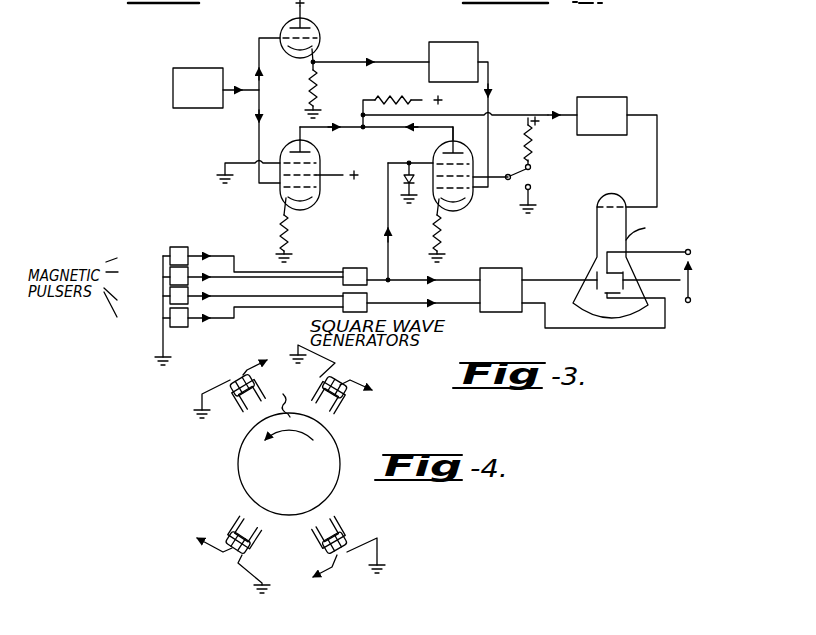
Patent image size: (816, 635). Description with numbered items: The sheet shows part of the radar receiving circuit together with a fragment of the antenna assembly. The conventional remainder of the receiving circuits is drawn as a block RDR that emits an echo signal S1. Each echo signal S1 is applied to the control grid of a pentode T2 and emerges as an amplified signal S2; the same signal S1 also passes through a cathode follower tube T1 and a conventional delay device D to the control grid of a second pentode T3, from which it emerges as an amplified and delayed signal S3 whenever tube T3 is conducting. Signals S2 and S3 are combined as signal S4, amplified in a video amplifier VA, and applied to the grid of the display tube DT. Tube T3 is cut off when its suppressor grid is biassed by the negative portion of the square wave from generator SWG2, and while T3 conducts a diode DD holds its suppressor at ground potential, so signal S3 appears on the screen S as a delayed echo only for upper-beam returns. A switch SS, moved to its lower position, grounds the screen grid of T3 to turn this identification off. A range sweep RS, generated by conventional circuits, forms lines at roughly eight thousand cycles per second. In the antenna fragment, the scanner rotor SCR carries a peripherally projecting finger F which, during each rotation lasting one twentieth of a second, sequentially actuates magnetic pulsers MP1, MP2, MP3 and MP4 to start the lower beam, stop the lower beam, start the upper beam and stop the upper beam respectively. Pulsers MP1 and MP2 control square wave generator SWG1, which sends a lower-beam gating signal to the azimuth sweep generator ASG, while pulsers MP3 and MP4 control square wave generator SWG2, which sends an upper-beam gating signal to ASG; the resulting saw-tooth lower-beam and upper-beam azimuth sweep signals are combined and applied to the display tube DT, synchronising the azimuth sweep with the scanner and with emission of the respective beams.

In FIG. 3, the cathode follower tube T1 is at (284, 29).
In FIG. 3, the pentode T2 is at (359, 179).
In FIG. 3, the second pentode T3 is at (464, 194).
In FIG. 3, the echo signal S1 is at (241, 80).
In FIG. 3, the amplified signal S2 is at (331, 141).
In FIG. 3, the amplified and delayed signal S3 is at (408, 141).
In FIG. 3, the combined signal S4 is at (558, 106).
In FIG. 3, the switch SS is at (531, 173).
In FIG. 3, the screen S is at (581, 316).
In FIG. 3, the radar receiving circuits RDR is at (173, 100).
In FIG. 3, the delay device D is at (429, 50).
In FIG. 3, the diode DD is at (403, 181).
In FIG. 3, the video amplifier VA is at (640, 88).
In FIG. 3, the display tube DT is at (597, 235).
In FIG. 3, the range sweep RS is at (653, 277).
In FIG. 3, the azimuth sweep generator ASG is at (510, 312).
In FIG. 3, the square wave generator SWG1 is at (343, 276).
In FIG. 3, the square wave generator SWG2 is at (367, 298).
In FIG. 3, the magnetic pulser MP1 is at (231, 317).
In FIG. 4, the magnetic pulser MP1 is at (230, 386).
In FIG. 3, the magnetic pulser MP2 is at (231, 295).
In FIG. 4, the magnetic pulser MP2 is at (220, 554).
In FIG. 3, the magnetic pulser MP3 is at (231, 274).
In FIG. 4, the magnetic pulser MP3 is at (357, 538).
In FIG. 3, the magnetic pulser MP4 is at (231, 255).
In FIG. 4, the magnetic pulser MP4 is at (341, 379).
In FIG. 4, the peripherally projecting finger F is at (287, 392).
In FIG. 4, the antenna scanner rotor SCR is at (323, 455).